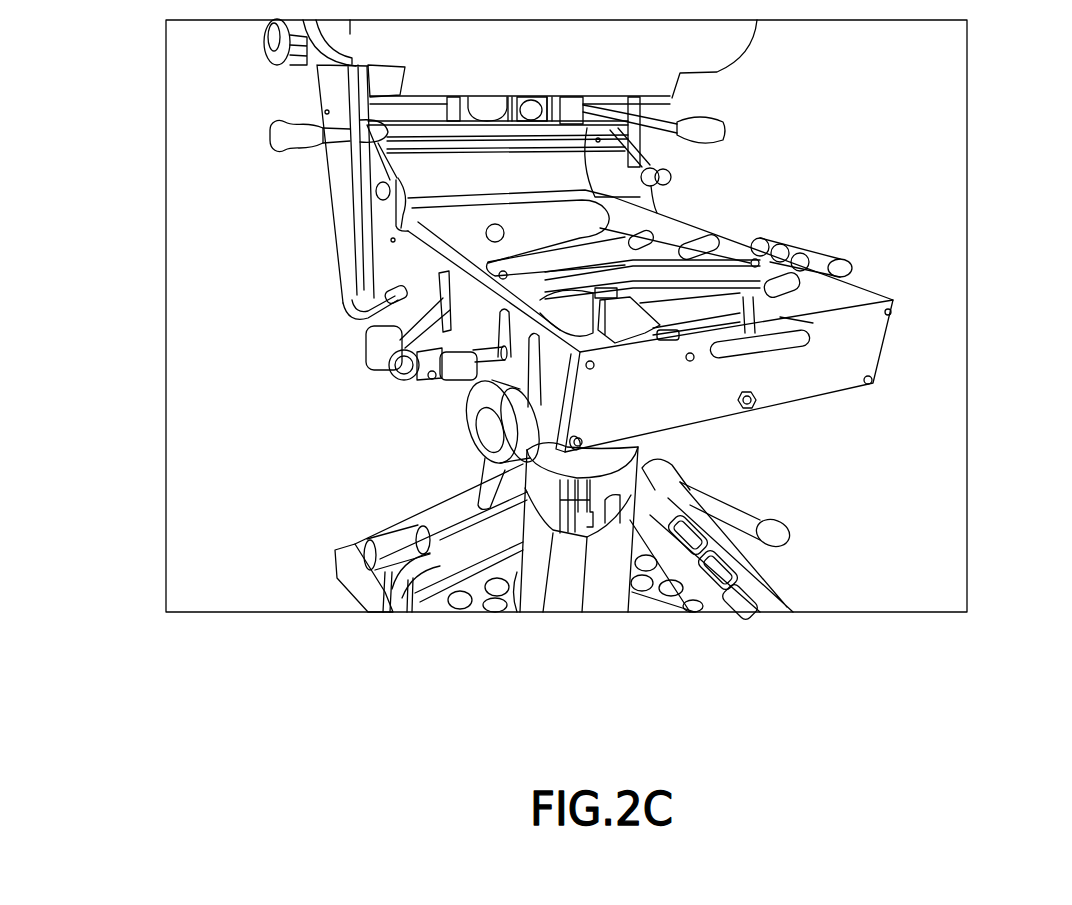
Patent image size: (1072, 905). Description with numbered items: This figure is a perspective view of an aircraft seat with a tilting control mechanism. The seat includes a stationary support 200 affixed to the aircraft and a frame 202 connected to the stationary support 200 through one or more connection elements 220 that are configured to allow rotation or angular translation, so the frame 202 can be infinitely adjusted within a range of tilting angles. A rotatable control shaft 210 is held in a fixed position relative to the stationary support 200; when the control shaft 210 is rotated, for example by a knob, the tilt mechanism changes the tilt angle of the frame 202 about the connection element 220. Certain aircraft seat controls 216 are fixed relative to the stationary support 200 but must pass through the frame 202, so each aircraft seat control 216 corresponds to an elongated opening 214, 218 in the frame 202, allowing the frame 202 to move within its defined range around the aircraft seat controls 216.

The stationary support 200 is at (650, 217).
The frame 202 is at (873, 347).
The rotatable control shaft 210 is at (503, 430).
The elongated opening 214 is at (500, 373).
The aircraft seat control 216 is at (377, 342).
The elongated opening 218 is at (445, 293).
The connection element 220 is at (755, 410).